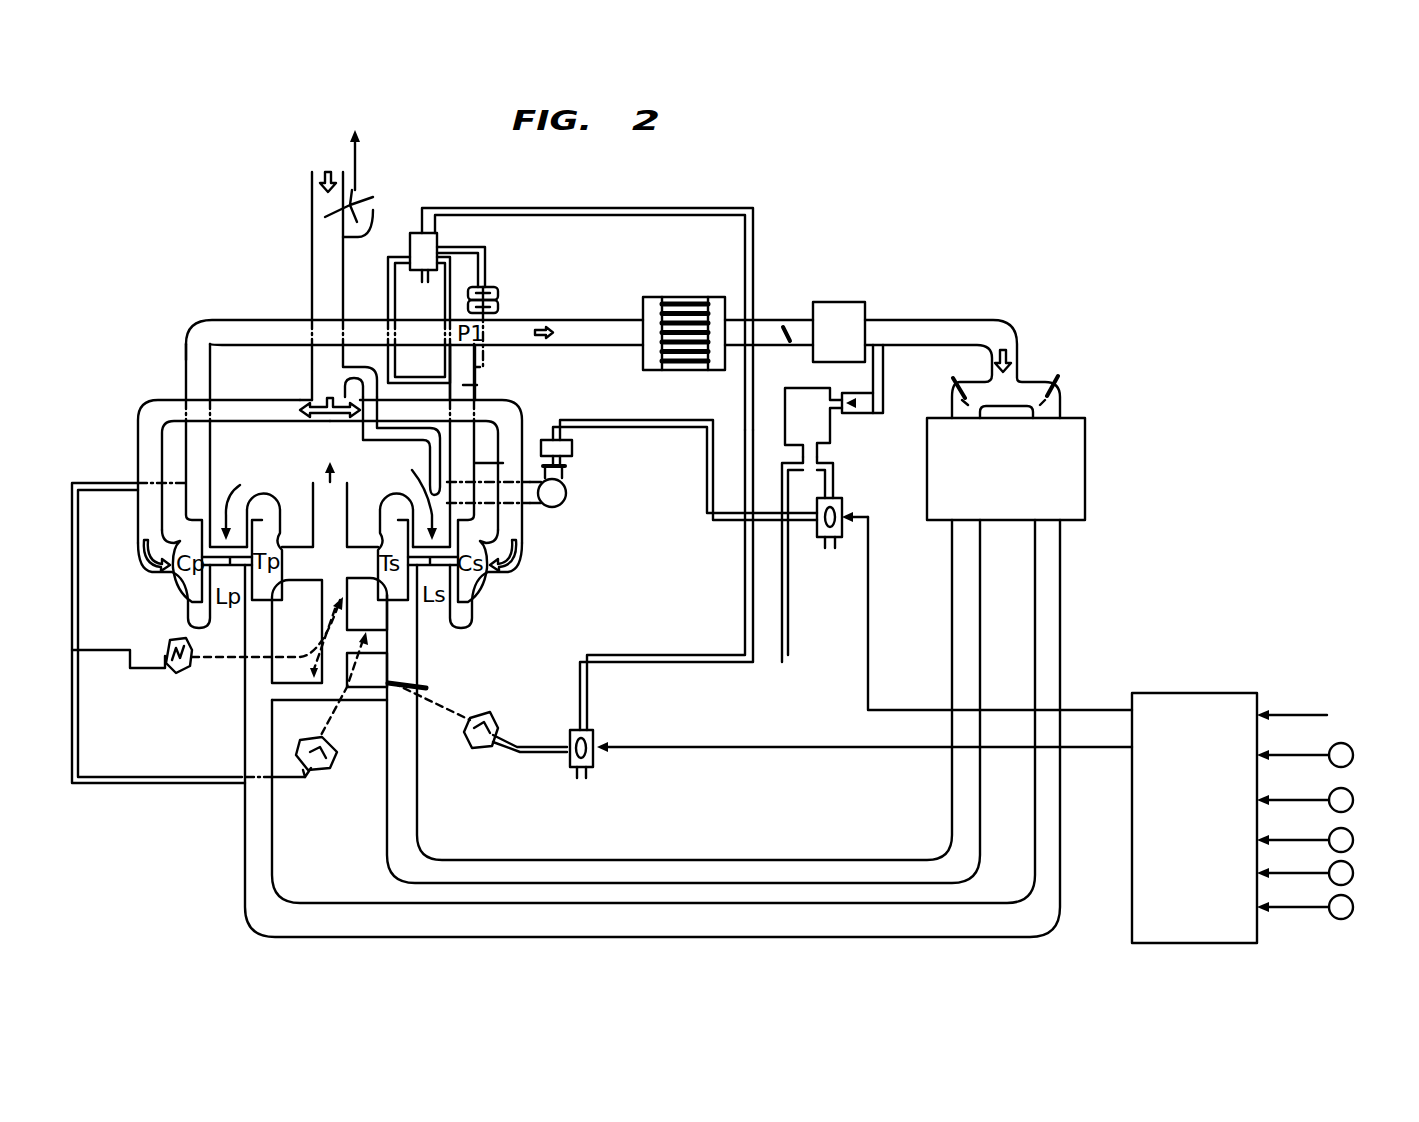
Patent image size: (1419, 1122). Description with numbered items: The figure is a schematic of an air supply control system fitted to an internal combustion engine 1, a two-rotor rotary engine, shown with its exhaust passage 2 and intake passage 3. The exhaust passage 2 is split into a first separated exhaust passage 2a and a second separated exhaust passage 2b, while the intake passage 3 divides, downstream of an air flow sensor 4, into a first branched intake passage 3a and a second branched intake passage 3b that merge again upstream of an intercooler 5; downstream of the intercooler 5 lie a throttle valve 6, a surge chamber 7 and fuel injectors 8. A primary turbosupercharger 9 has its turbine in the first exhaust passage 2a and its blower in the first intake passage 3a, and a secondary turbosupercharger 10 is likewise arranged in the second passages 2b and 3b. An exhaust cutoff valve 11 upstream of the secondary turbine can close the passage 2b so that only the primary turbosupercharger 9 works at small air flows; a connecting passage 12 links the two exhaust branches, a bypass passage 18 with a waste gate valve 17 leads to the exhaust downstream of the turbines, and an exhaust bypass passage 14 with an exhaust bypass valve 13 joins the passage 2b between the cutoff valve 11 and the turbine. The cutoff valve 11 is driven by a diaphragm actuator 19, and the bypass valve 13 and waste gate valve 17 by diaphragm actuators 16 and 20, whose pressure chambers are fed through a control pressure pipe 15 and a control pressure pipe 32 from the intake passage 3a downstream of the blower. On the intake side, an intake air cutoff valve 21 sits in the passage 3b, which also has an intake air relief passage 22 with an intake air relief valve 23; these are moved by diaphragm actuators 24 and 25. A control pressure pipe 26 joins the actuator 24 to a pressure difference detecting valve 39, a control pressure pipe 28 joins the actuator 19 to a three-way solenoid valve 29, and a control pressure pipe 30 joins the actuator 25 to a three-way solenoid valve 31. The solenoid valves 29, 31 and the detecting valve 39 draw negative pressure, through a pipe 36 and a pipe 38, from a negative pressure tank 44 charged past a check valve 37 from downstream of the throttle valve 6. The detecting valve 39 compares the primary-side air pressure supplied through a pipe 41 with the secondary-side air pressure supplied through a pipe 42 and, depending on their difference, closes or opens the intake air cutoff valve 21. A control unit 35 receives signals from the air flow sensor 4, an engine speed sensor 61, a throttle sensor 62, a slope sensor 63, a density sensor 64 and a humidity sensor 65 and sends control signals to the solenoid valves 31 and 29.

The internal combustion engine 1 is at (1080, 418).
The exhaust passage 2 is at (360, 492).
The first separated exhaust passage 2a is at (1050, 572).
The second separated exhaust passage 2b is at (973, 595).
The intake passage 3 is at (312, 266).
The first branched intake passage 3a is at (186, 363).
The second branched intake passage 3b is at (503, 387).
The air flow sensor 4 is at (362, 200).
The intercooler 5 is at (660, 371).
The throttle valve 6 is at (787, 345).
The surge chamber 7 is at (832, 302).
The fuel injectors 8 is at (958, 378).
The primary turbosupercharger 9 is at (237, 499).
The secondary turbosupercharger 10 is at (418, 491).
The exhaust cutoff valve 11 is at (427, 687).
The connecting passage 12 is at (357, 700).
The exhaust bypass valve 13 is at (387, 655).
The exhaust bypass passage 14 is at (380, 622).
The control pressure pipe 15 is at (168, 793).
The diaphragm actuator 16 is at (303, 742).
The waste gate valve 17 is at (340, 597).
The bypass passage 18 is at (266, 633).
The diaphragm actuator 19 is at (480, 748).
The diaphragm actuator 20 is at (183, 672).
The intake air cutoff valve 21 is at (470, 363).
The intake air relief passage 22 is at (562, 502).
The intake air relief valve 23 is at (572, 480).
The diaphragm actuator 24 is at (497, 294).
The diaphragm actuator 25 is at (573, 444).
The control pressure pipe 26 is at (487, 252).
The control pressure pipe 28 is at (545, 742).
The three-way solenoid valve 29 is at (594, 733).
The control pressure pipe 30 is at (710, 521).
The three-way solenoid valve 31 is at (843, 503).
The control pressure pipe 32 is at (145, 672).
The control unit 35 is at (1222, 693).
The pipe 36 is at (743, 432).
The check valve 37 is at (867, 396).
The pipe 38 is at (622, 208).
The pressure difference detecting valve 39 is at (405, 233).
The pipe 41 is at (440, 289).
The pipe 42 is at (388, 307).
The negative pressure tank 44 is at (826, 433).
The engine speed sensor 61 is at (1353, 748).
The throttle sensor 62 is at (1353, 793).
The slope sensor 63 is at (1353, 833).
The density sensor 64 is at (1353, 866).
The humidity sensor 65 is at (1353, 900).